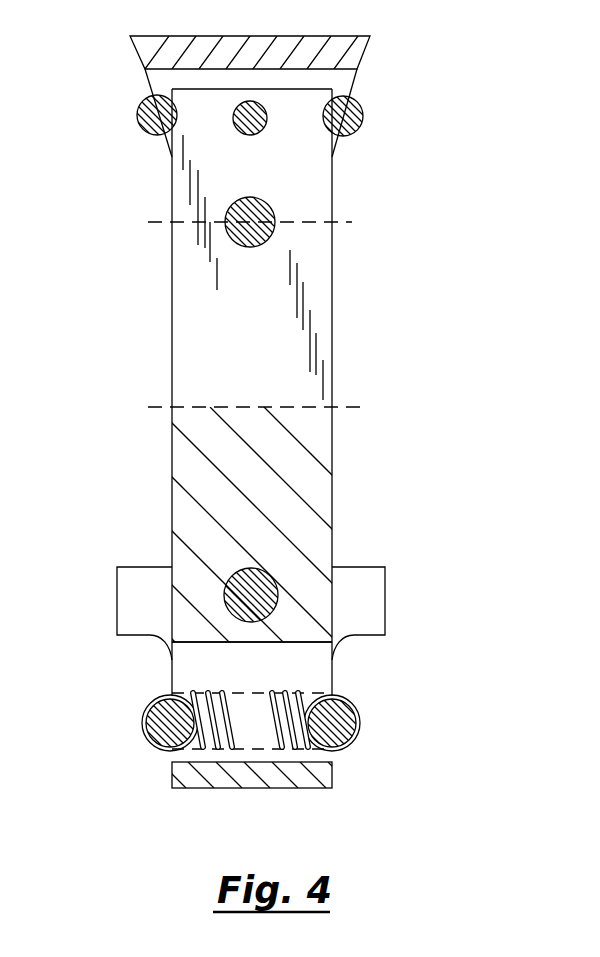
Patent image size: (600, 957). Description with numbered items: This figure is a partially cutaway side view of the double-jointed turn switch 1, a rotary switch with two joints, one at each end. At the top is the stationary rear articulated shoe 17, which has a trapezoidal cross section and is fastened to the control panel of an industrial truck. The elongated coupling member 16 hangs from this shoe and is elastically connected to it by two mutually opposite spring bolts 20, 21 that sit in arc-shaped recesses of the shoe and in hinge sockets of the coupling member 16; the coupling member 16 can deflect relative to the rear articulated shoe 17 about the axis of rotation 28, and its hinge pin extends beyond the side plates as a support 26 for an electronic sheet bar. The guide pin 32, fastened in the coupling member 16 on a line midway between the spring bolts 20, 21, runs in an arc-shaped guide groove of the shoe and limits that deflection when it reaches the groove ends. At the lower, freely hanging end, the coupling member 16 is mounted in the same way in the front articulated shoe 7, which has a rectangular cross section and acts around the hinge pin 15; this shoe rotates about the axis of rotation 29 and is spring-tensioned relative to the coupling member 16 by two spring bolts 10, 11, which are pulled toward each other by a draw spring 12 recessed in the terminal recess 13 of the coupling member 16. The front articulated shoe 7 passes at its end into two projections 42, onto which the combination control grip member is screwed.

The double-jointed turn switch 1 is at (365, 287).
The second articulated shoe 7 is at (198, 774).
The spring bolt 10 is at (360, 705).
The spring bolt 11 is at (152, 722).
The draw spring 12 is at (292, 742).
The terminal recess 13 is at (300, 677).
The hinge pin 15 is at (280, 587).
The coupling member 16 is at (215, 342).
The rear articulated shoe 17 is at (165, 43).
The spring bolt 20 is at (350, 118).
The spring bolt 21 is at (147, 110).
The support 26 is at (136, 220).
The axis of rotation 28 is at (232, 240).
The axis of rotation 29 is at (148, 595).
The guide pin 32 is at (234, 130).
The projections 42 is at (130, 607).